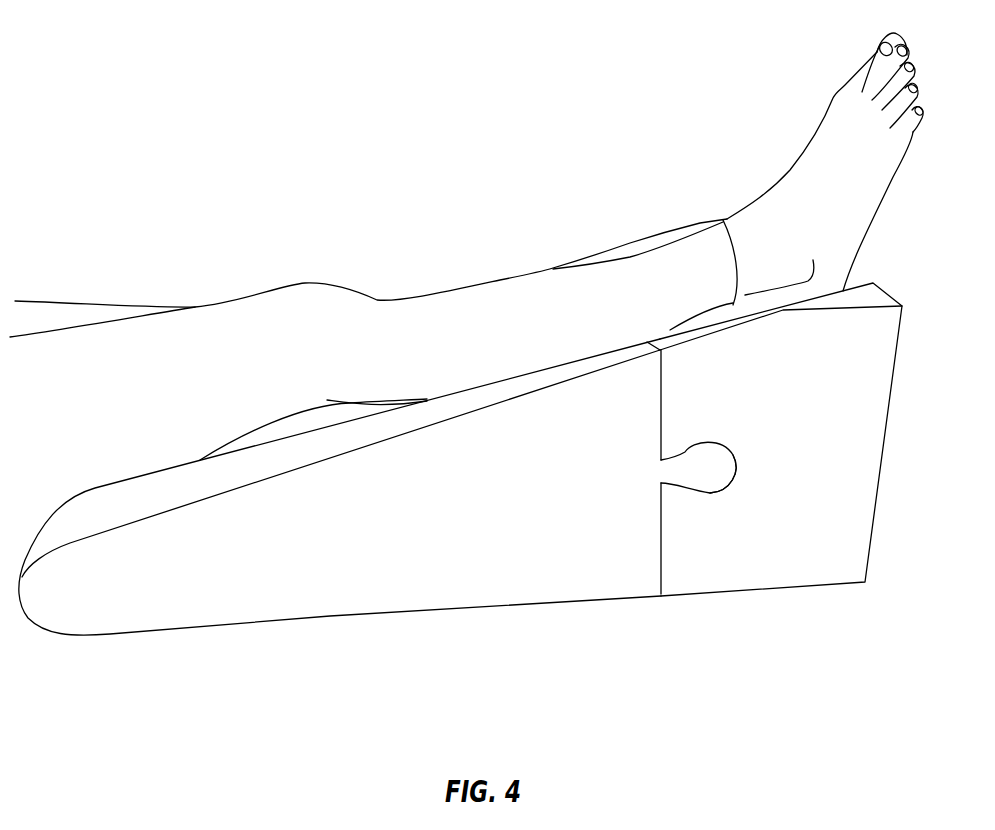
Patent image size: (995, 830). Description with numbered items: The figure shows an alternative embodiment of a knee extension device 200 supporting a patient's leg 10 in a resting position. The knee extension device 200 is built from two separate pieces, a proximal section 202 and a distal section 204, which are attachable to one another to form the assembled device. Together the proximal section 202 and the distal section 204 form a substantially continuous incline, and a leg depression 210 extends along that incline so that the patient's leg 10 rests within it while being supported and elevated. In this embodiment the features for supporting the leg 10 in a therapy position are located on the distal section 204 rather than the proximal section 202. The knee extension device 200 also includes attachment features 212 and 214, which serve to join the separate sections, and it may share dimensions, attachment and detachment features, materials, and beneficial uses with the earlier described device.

The knee extension device 200 is at (132, 107).
The patient's leg 10 is at (103, 350).
The leg depression 210 is at (723, 217).
The proximal section 202 is at (247, 610).
The distal section 204 is at (813, 562).
The attachment feature 212 is at (702, 480).
The attachment feature 214 is at (733, 473).